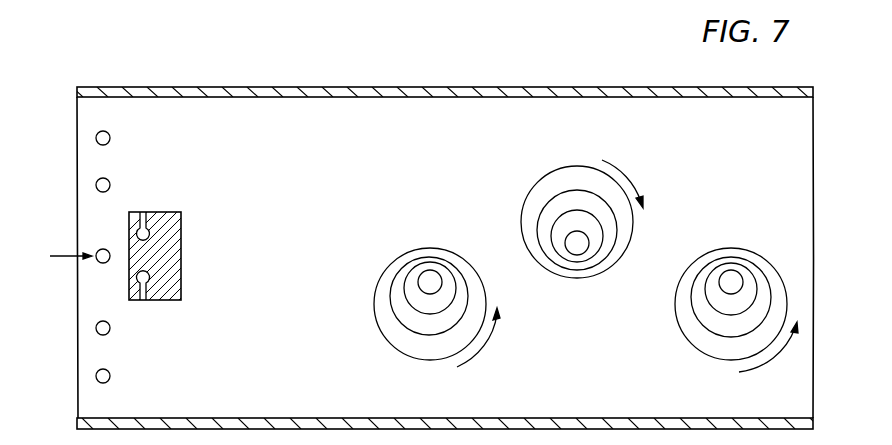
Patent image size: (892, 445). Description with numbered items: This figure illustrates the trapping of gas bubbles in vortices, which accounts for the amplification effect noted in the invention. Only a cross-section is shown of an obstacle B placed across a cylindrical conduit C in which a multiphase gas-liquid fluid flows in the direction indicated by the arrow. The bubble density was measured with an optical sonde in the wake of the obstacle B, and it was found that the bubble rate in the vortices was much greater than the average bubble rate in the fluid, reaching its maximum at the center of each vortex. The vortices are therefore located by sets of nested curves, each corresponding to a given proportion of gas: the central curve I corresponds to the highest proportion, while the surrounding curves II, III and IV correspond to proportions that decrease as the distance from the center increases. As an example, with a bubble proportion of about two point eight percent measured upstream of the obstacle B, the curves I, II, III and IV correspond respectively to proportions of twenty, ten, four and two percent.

The cylindrical conduit C is at (215, 86).
The obstacle B is at (183, 228).
The central curve I is at (417, 281).
The curve II is at (403, 297).
The curve III is at (395, 317).
The curve IV is at (385, 340).